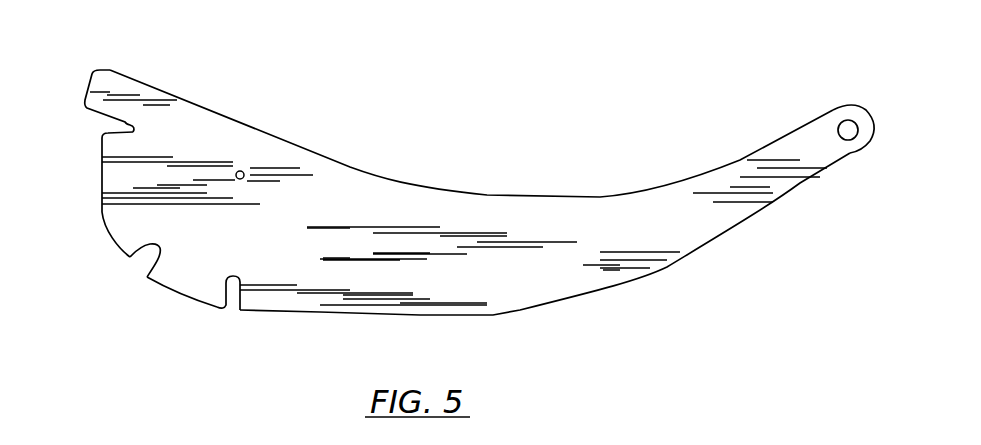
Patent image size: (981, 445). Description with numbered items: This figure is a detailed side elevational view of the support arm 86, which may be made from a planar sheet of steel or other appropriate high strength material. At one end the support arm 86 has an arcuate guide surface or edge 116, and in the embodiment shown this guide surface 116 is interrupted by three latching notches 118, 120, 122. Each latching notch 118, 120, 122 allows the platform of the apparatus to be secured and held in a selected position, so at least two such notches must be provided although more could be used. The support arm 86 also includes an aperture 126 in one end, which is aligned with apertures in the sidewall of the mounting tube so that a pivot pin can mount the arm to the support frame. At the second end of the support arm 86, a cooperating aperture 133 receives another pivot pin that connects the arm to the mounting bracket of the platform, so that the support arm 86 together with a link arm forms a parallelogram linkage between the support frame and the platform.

The support arm 86 is at (407, 188).
The arcuate guide surface 116 is at (102, 211).
The latching notch 118 is at (230, 290).
The latching notch 120 is at (128, 126).
The latching notch 122 is at (147, 258).
The aperture 126 is at (847, 122).
The cooperating aperture 133 is at (243, 172).